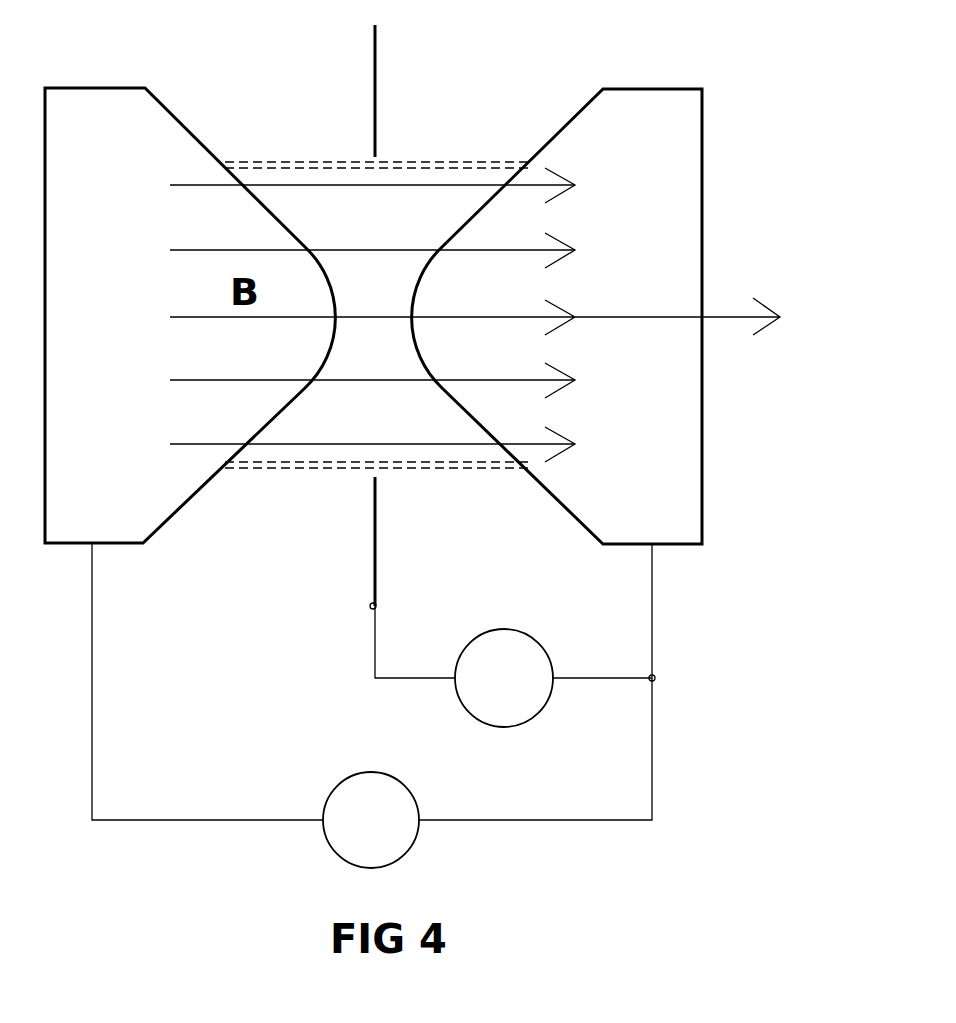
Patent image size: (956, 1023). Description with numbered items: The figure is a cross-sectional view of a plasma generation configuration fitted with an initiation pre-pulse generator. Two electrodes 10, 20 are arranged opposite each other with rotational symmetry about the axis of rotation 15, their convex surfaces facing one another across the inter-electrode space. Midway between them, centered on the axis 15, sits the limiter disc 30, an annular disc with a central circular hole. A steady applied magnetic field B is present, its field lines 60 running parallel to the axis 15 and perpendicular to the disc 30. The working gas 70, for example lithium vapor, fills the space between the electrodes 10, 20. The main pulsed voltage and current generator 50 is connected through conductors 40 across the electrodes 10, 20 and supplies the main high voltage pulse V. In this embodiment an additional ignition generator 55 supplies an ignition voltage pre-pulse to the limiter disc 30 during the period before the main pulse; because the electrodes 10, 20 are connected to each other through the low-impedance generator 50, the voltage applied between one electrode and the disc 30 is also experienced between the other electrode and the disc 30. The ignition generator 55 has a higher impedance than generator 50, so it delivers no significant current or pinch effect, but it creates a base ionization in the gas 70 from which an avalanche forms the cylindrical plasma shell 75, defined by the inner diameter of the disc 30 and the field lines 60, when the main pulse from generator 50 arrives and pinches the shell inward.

The electrode 10 is at (189, 121).
The electrode 20 is at (625, 83).
The limiter disc 30 is at (380, 70).
The axis of rotation 15 is at (603, 316).
The field lines 60 is at (183, 246).
The working gas 70 is at (291, 532).
The plasma shell 75 is at (486, 162).
The conductors 40 is at (95, 591).
The pulsed voltage and current generator 50 is at (427, 835).
The ignition generator 55 is at (560, 693).